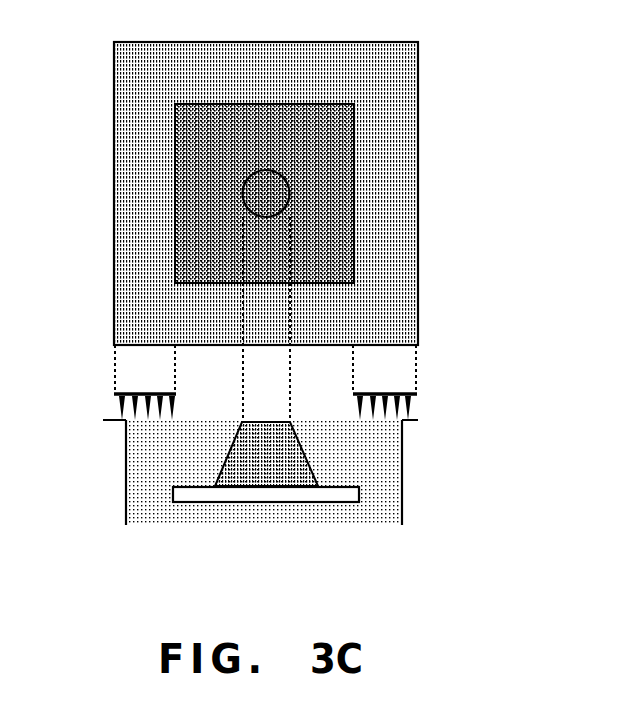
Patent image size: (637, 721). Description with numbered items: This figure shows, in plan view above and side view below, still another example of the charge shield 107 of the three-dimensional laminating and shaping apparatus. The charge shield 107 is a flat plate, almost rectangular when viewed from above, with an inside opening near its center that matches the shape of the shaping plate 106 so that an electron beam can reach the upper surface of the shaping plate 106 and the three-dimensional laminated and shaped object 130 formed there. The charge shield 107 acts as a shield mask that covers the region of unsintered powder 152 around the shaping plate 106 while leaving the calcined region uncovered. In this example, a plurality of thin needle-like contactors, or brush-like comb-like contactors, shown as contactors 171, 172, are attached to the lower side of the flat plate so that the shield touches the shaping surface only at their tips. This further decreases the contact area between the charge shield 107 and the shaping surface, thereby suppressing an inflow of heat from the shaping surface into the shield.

The shaping plate 106 is at (360, 492).
The charge shield 107 is at (418, 251).
The three-dimensional laminated and shaped object 130 is at (268, 170).
The unsintered powder 152 is at (343, 145).
The contactor 171 is at (125, 408).
The second alignment pins 172 is at (410, 409).